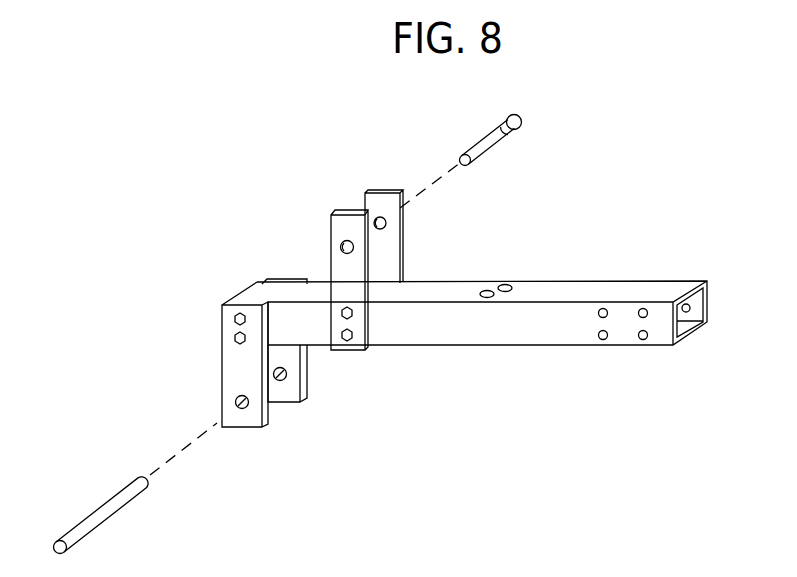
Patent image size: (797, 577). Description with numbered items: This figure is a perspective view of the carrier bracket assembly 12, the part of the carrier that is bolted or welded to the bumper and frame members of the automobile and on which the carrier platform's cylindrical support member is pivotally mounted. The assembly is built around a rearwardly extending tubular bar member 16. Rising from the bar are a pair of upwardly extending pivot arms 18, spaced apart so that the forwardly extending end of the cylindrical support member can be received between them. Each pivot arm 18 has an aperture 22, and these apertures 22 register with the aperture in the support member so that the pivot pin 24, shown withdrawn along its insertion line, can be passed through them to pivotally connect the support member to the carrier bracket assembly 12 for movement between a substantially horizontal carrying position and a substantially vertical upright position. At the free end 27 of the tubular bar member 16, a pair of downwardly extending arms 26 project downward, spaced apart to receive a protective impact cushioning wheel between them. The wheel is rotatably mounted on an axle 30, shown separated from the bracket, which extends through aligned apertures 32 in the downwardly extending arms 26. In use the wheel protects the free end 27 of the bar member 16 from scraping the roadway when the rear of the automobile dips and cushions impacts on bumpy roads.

The carrier bracket assembly 12 is at (313, 332).
The tubular bar member 16 is at (505, 332).
The pivot arms 18 is at (353, 210).
The apertures 22 is at (386, 223).
The pivot pin 24 is at (505, 142).
The downwardly extending arms 26 is at (282, 403).
The free end 27 is at (253, 295).
The axle 30 is at (122, 508).
The apertures 32 is at (236, 402).